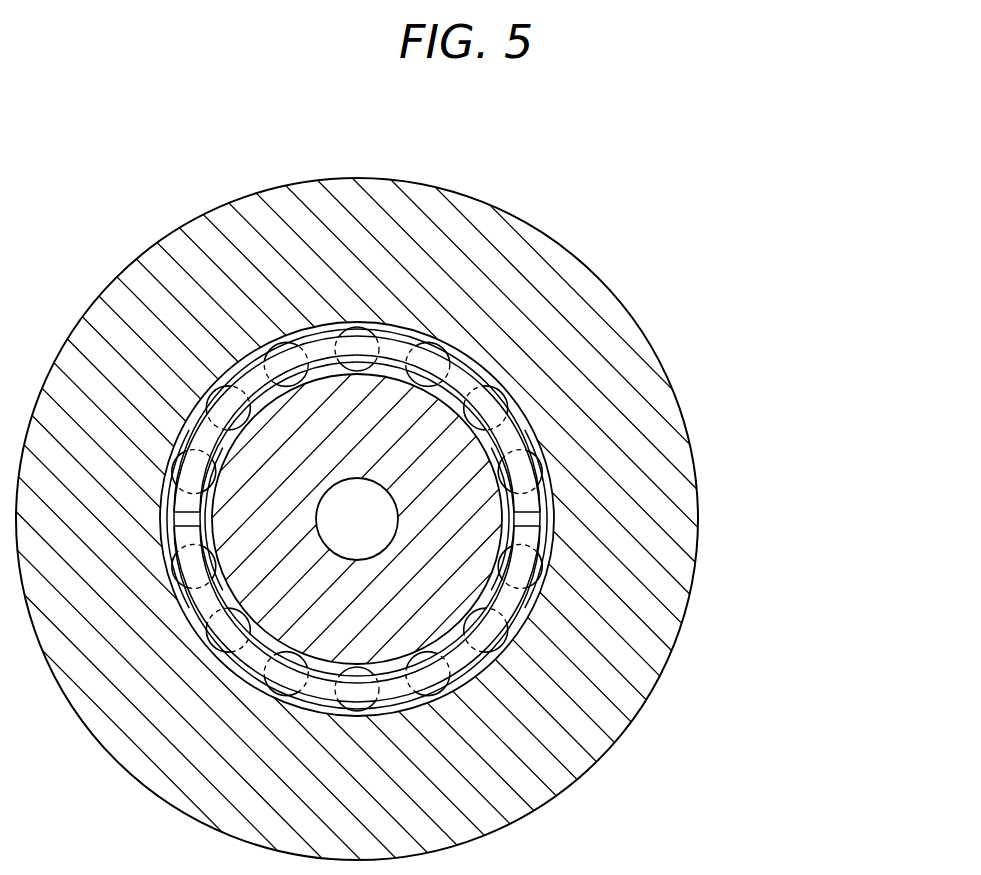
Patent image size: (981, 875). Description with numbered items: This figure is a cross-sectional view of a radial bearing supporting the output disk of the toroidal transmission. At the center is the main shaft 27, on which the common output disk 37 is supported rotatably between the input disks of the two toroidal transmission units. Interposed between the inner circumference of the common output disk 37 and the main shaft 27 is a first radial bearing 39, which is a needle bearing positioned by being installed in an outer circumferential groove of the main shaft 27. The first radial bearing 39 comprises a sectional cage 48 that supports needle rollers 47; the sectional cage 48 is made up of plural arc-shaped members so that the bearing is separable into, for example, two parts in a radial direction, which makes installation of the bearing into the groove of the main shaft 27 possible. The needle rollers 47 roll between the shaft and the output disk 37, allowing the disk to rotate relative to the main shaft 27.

The main shaft 27 is at (425, 582).
The common output disk 37 is at (685, 413).
The first radial bearing 39 is at (530, 605).
The needle rollers 47 is at (540, 475).
The sectional cage 48 is at (527, 427).